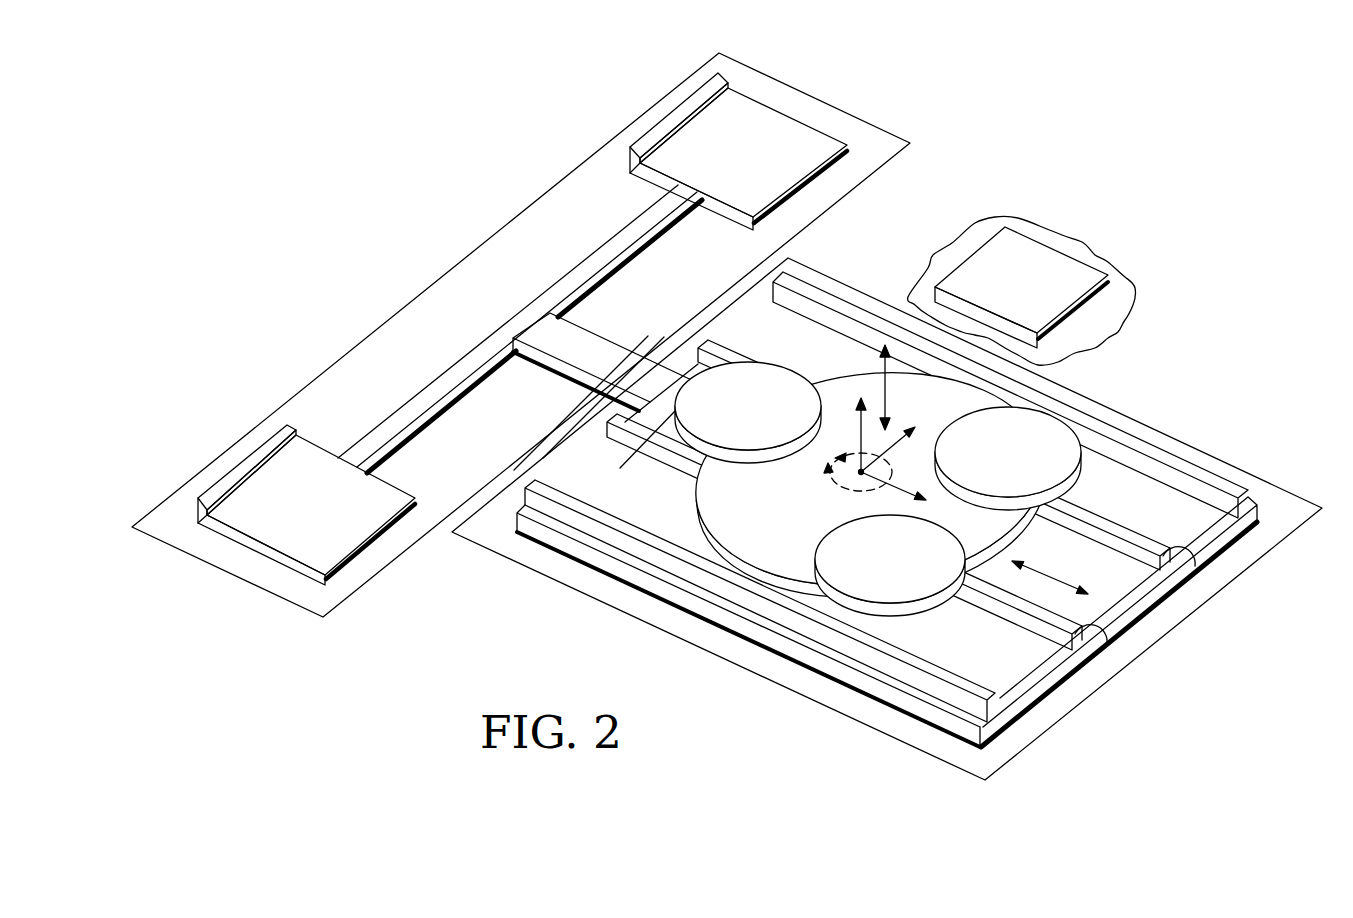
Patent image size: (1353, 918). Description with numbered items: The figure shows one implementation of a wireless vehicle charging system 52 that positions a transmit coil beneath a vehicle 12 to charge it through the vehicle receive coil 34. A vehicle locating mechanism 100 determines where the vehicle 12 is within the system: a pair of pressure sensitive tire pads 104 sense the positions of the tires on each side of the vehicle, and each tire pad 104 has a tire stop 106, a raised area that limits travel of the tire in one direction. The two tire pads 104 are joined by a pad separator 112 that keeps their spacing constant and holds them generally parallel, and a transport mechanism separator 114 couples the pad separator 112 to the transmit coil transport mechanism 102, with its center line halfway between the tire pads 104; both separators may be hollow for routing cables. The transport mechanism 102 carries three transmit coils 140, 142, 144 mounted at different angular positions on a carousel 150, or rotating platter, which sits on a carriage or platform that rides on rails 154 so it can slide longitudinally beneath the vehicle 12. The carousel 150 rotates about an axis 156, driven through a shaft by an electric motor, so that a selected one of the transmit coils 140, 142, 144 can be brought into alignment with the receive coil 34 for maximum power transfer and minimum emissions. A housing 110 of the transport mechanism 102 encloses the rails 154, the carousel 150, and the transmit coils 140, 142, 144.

The wireless vehicle charging system 52 is at (457, 178).
The vehicle locating mechanism 100 is at (743, 62).
The transmit coil transport mechanism 102 is at (1063, 720).
The pressure sensitive tire pad 104 is at (790, 115).
The tire stop 106 is at (667, 113).
The housing 110 is at (510, 520).
The pad separator 112 is at (543, 287).
The transport mechanism separator 114 is at (590, 333).
The vehicle 12 is at (1034, 226).
The receive coil 34 is at (1082, 254).
The transmit coil 140 is at (745, 395).
The transmit coil 142 is at (1060, 462).
The transmit coil 144 is at (915, 585).
The carousel 150 is at (735, 487).
The rails 154 is at (1173, 555).
The axis 156 is at (857, 422).